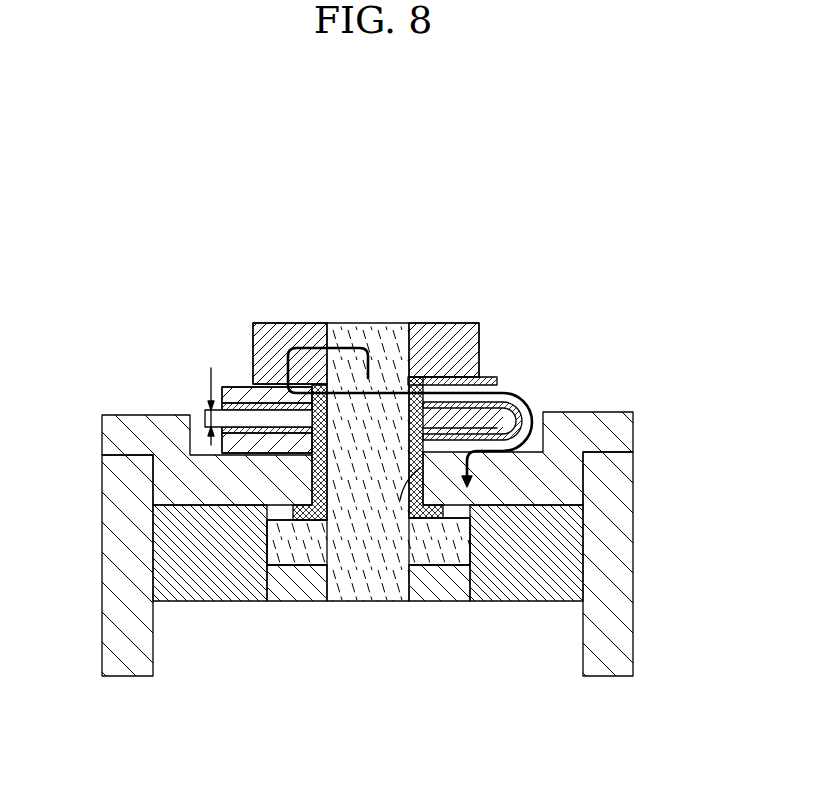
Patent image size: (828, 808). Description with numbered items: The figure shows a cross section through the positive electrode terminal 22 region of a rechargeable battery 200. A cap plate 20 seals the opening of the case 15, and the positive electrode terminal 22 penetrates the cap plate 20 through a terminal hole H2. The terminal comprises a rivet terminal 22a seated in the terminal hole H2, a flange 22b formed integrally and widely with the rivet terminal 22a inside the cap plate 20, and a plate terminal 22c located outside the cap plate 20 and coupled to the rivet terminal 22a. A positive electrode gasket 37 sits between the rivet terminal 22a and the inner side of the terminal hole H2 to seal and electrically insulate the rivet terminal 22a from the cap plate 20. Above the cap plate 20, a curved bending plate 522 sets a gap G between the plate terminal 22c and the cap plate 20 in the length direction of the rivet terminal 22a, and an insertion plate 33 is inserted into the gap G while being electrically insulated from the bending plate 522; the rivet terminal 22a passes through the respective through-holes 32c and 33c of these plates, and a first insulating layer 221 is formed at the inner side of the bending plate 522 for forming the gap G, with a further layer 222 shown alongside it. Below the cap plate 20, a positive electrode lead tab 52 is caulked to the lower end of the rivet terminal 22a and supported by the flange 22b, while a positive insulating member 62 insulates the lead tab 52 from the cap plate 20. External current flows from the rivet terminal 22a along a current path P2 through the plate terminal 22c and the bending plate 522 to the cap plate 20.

The rechargeable battery 200 is at (374, 430).
The case 15 is at (617, 607).
The cap plate 20 is at (557, 475).
The positive insulating member 62 is at (553, 541).
The positive electrode terminal 22 is at (372, 454).
The rivet terminal 22a is at (375, 650).
The flange 22b is at (295, 663).
The plate terminal 22c is at (458, 332).
The through-hole 32c is at (312, 443).
The insertion plate 33 is at (206, 369).
The through-hole 33c is at (297, 452).
The positive electrode gasket 37 is at (333, 503).
The positive electrode lead tab 52 is at (438, 585).
The bending plate 522 is at (242, 351).
The first insulating layer 221 is at (508, 386).
The diaphragm top layer 222 is at (491, 377).
The gap G is at (202, 403).
The terminal hole H2 is at (400, 500).
The current path P2 is at (514, 397).